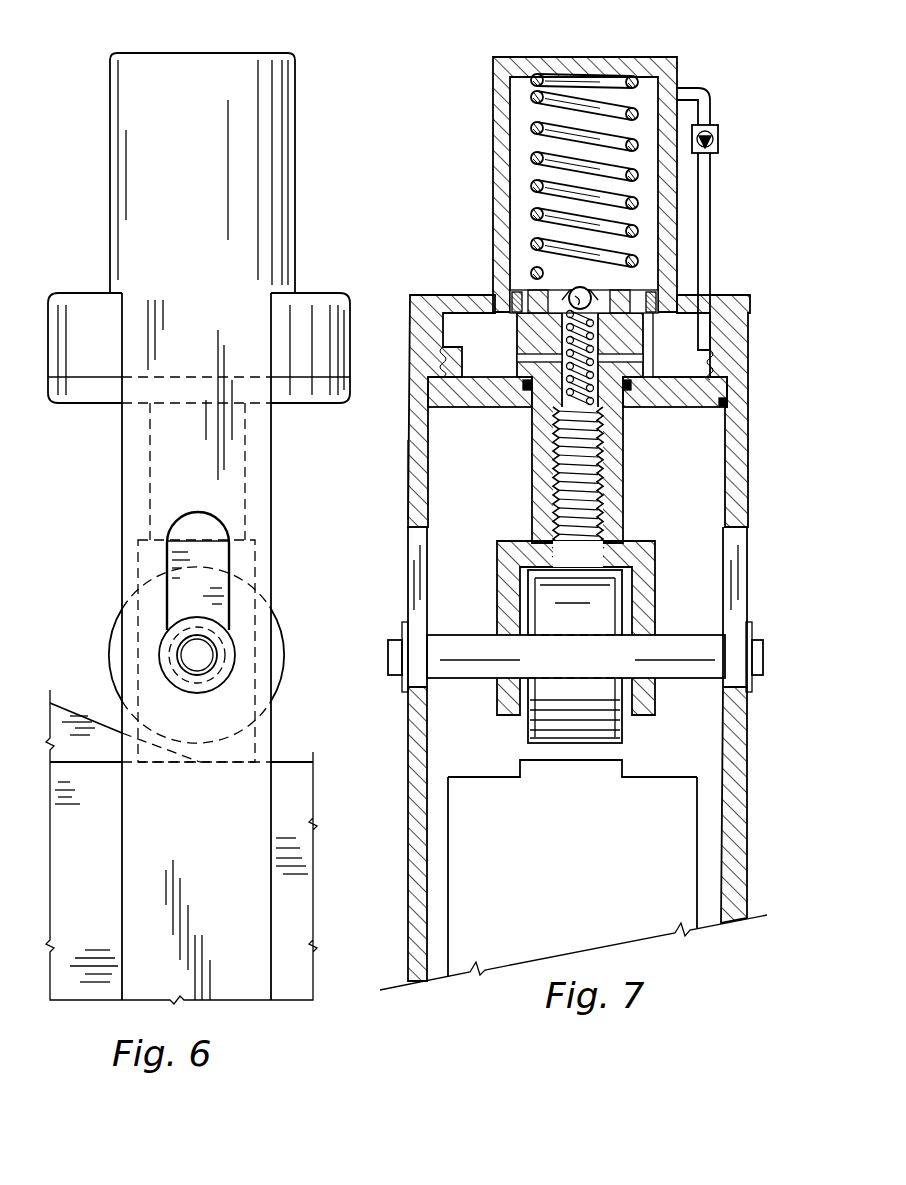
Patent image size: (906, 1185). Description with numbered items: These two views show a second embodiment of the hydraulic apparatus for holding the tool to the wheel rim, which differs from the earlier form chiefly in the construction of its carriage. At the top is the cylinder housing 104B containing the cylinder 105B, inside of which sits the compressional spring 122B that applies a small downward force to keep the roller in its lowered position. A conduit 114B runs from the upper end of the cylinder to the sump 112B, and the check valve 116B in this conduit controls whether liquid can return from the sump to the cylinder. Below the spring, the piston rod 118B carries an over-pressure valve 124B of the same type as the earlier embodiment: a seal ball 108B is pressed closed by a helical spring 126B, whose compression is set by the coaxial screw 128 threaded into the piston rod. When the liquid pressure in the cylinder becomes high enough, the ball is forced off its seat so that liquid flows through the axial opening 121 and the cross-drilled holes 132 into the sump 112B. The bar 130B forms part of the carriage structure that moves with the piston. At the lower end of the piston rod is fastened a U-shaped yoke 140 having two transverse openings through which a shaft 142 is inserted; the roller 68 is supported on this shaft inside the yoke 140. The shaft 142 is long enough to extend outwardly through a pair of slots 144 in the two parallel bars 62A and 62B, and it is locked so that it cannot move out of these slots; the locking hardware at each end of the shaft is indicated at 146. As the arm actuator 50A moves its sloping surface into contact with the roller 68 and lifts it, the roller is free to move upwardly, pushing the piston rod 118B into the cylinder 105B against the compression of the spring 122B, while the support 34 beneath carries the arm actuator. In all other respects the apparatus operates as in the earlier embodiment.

In FIG. 6, the cylinder housing 104B is at (295, 100).
In FIG. 7, the cylinder housing 104B is at (687, 63).
In FIG. 7, the cylinder 105B is at (518, 57).
In FIG. 7, the compressional spring 122B is at (588, 100).
In FIG. 7, the conduit 114B is at (712, 93).
In FIG. 7, the check valve 116B is at (719, 139).
In FIG. 7, the seal ball 108B is at (566, 290).
In FIG. 7, the over-pressure valve 124B is at (558, 292).
In FIG. 7, the sump 112B is at (685, 330).
In FIG. 7, the cross-drilled holes 132 is at (517, 358).
In FIG. 7, the axial opening 121 is at (522, 392).
In FIG. 7, the bar 130B is at (700, 415).
In FIG. 7, the helical spring 126B is at (575, 420).
In FIG. 7, the piston rod 118B is at (532, 470).
In FIG. 6, the bar 62A is at (271, 458).
In FIG. 7, the bar 62A is at (408, 480).
In FIG. 7, the bar 62B is at (748, 478).
In FIG. 7, the coaxial screw 128 is at (582, 503).
In FIG. 6, the U-shaped yoke 140 is at (138, 561).
In FIG. 7, the U-shaped yoke 140 is at (655, 592).
In FIG. 7, the shaft 142 is at (706, 635).
In FIG. 6, the slots 144 is at (218, 552).
In FIG. 7, the slots 144 is at (420, 558).
In FIG. 6, the pivot pin 146 is at (230, 665).
In FIG. 7, the pivot pin 146 is at (402, 622).
In FIG. 7, the roller 68 is at (560, 710).
In FIG. 6, the arm actuator 50A is at (70, 703).
In FIG. 7, the arm actuator 50A is at (590, 762).
In FIG. 6, the support 34 is at (90, 883).
In FIG. 7, the support 34 is at (584, 886).